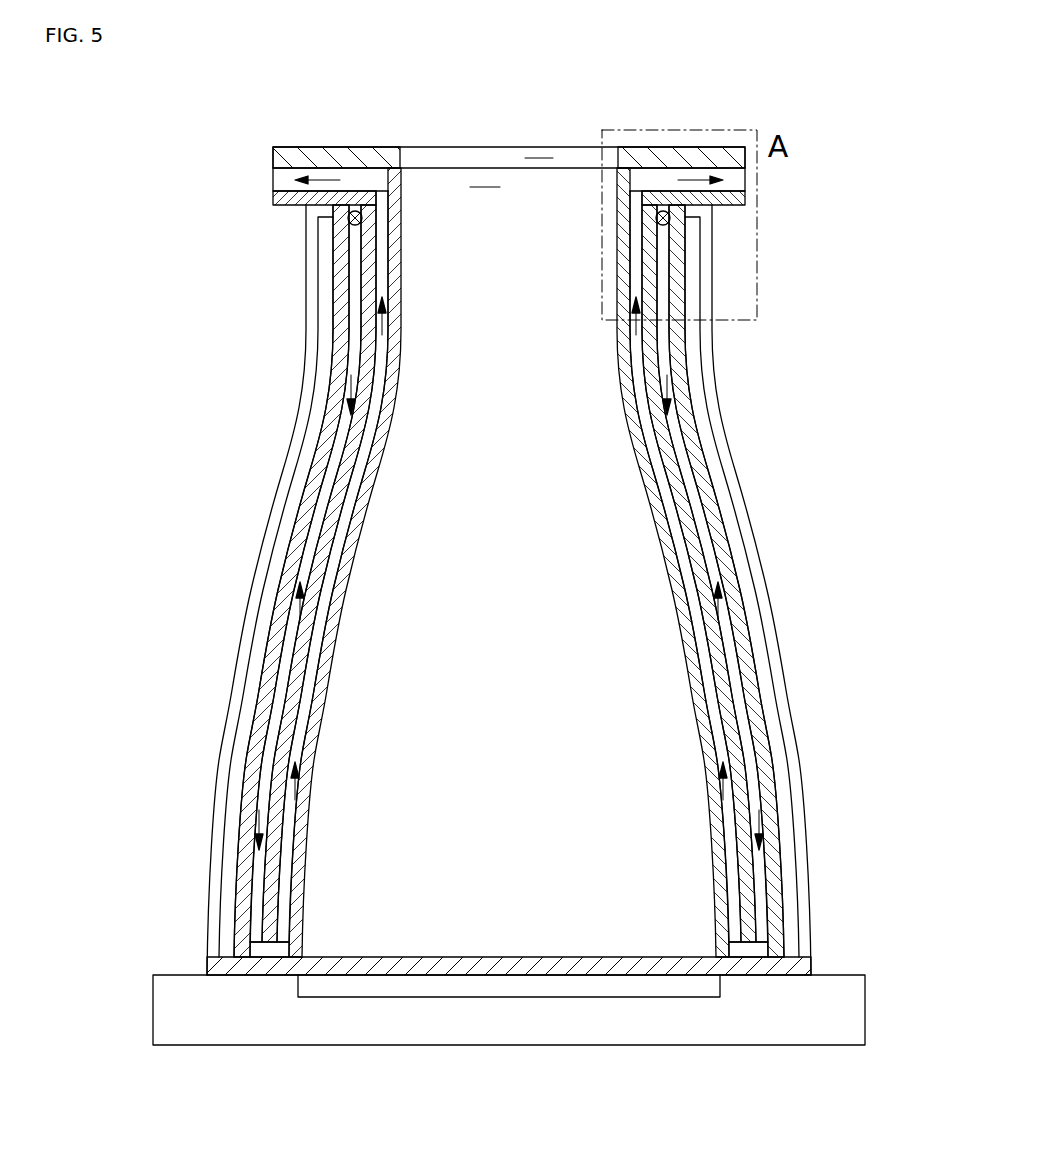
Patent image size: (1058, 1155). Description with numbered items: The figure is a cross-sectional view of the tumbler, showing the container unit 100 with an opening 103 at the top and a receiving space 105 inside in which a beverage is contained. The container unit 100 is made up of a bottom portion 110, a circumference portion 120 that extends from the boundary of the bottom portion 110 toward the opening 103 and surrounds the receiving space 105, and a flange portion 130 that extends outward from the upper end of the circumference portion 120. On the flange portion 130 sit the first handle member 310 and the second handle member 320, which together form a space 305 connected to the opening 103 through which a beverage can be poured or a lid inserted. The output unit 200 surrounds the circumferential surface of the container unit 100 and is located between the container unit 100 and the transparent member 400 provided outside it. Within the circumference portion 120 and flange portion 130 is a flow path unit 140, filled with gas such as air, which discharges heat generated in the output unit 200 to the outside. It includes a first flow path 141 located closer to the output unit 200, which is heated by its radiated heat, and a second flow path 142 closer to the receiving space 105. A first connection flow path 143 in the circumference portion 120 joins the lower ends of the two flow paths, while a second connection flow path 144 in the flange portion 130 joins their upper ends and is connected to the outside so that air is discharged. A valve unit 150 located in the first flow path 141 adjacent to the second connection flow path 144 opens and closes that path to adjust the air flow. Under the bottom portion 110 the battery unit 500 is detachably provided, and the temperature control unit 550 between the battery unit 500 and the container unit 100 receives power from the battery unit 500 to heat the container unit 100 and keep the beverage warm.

The container unit 100 is at (318, 468).
The opening 103 is at (485, 187).
The receiving space 105 is at (420, 552).
The bottom portion 110 is at (762, 965).
The circumference portion 120 is at (730, 690).
The flange portion 130 is at (280, 200).
The flow path unit 140 is at (257, 767).
The first flow path 141 is at (278, 690).
The second flow path 142 is at (312, 670).
The first connection flow path 143 is at (255, 948).
The second connection flow path 144 is at (290, 186).
The valve unit 150 is at (348, 222).
The output unit 200 is at (692, 392).
The space 305 is at (540, 157).
The first handle member 310 is at (340, 147).
The second handle member 320 is at (705, 147).
The transparent member 400 is at (740, 528).
The battery unit 500 is at (848, 1020).
The temperature control unit 550 is at (318, 987).